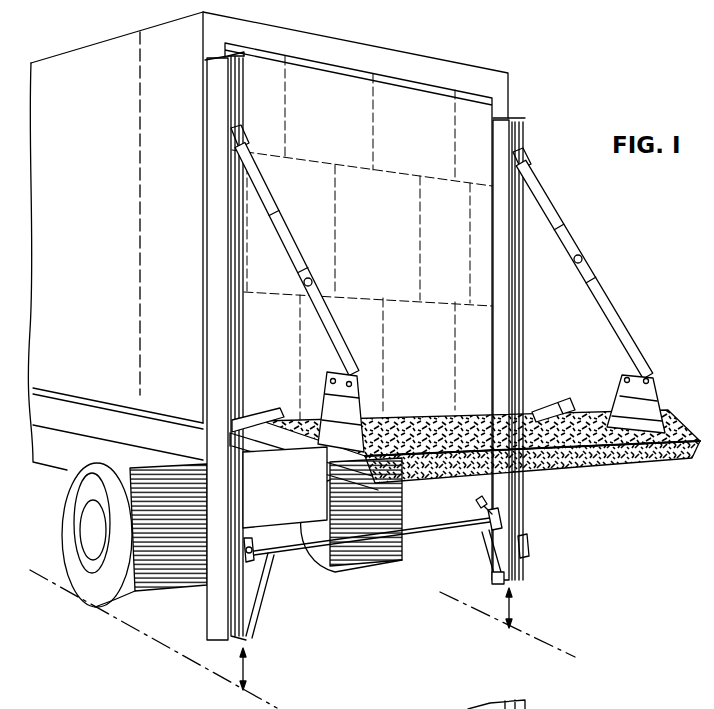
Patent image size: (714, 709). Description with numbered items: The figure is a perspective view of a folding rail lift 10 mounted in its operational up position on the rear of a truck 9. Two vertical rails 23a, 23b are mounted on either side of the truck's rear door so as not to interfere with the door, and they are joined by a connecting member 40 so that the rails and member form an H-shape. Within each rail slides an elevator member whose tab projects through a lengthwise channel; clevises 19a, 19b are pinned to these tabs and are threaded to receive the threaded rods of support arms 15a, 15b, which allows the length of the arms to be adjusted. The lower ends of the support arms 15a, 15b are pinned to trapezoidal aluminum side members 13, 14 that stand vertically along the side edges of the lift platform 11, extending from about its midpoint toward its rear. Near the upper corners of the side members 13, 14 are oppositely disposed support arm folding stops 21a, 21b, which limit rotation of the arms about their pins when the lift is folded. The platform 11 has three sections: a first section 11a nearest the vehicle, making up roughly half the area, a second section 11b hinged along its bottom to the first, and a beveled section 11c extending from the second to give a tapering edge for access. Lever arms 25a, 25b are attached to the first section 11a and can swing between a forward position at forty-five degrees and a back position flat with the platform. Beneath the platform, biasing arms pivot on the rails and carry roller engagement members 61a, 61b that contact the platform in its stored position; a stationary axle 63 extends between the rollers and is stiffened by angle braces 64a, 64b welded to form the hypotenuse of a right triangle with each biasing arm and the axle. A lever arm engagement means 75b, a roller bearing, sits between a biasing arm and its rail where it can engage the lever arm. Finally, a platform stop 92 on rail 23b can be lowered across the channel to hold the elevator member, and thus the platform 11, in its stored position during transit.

The truck 9 is at (83, 58).
The rail lift 10 is at (617, 263).
The lift platform 11 is at (465, 443).
The first section 11a is at (428, 418).
The second section 11b is at (584, 445).
The beveled section 11c is at (626, 455).
The side member 13 is at (330, 373).
The side member 14 is at (647, 403).
The support arm 15a is at (289, 244).
The support arm 15b is at (560, 232).
The clevis 19a is at (238, 145).
The clevis 19b is at (527, 170).
The support arm folding stop 21a is at (328, 381).
The support arm folding stop 21b is at (623, 379).
The rail 23a is at (233, 101).
The rail 23b is at (492, 137).
The lever arm 25a is at (278, 412).
The lever arm 25b is at (563, 404).
The connecting member 40 is at (283, 458).
The engagement member 61a is at (253, 547).
The engagement member 61b is at (504, 518).
The stationary axle 63 is at (423, 528).
The angle brace 64a is at (254, 598).
The angle brace 64b is at (483, 545).
The lever arm engagement means 75b is at (500, 585).
The platform stop 92 is at (541, 546).